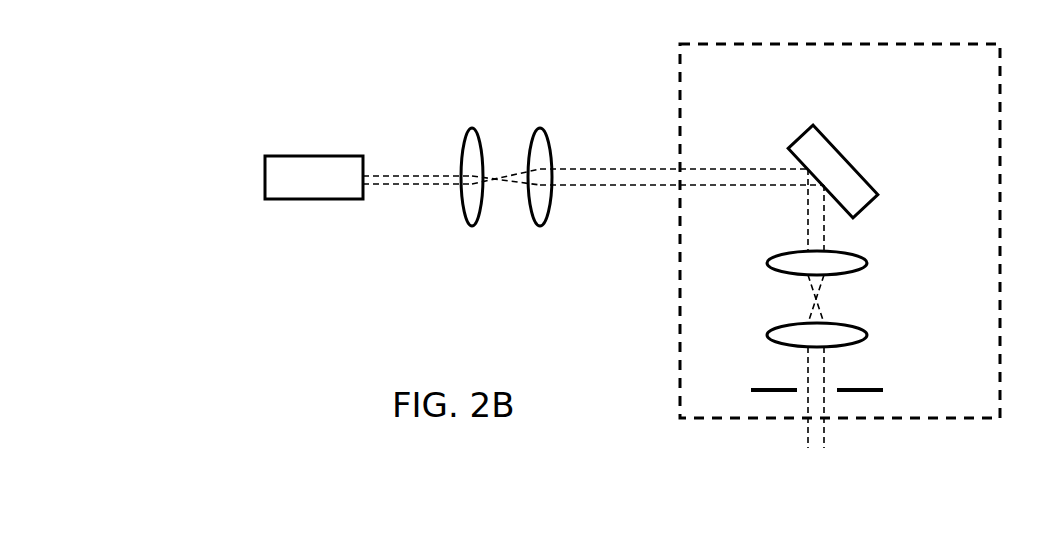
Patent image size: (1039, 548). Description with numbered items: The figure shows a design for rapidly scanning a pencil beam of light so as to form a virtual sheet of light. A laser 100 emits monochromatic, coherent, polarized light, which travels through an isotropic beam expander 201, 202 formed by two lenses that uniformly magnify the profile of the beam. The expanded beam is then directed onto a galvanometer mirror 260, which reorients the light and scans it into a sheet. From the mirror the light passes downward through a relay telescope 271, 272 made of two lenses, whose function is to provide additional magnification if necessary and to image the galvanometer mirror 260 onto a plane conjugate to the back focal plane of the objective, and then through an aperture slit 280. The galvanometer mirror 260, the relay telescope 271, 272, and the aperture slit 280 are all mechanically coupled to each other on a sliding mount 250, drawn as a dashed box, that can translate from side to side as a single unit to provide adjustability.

The laser 100 is at (352, 155).
The isotropic beam expander 201 is at (472, 127).
The isotropic beam expander 202 is at (539, 127).
The mount 250 is at (678, 265).
The galvanometer mirror 260 is at (838, 150).
The relay telescope 271 is at (853, 255).
The relay telescope 272 is at (853, 325).
The aperture slit 280 is at (868, 388).